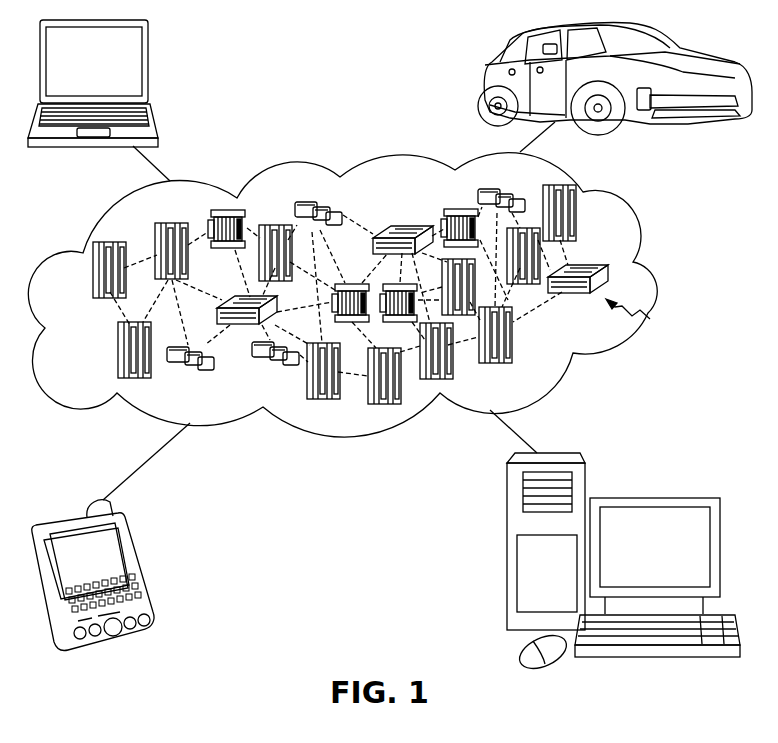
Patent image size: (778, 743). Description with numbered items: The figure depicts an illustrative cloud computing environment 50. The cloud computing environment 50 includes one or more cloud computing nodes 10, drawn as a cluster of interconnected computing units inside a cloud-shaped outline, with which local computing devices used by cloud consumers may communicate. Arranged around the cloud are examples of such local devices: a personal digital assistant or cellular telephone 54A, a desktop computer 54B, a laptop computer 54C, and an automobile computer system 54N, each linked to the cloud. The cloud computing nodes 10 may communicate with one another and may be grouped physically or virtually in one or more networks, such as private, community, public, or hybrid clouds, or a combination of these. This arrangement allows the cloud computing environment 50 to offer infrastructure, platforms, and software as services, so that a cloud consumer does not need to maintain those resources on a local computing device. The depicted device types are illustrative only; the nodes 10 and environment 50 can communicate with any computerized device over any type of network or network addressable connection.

The cloud computing nodes 10 is at (650, 319).
The cloud computing environment 50 is at (657, 279).
The personal digital assistant (PDA) or cellular telephone 54A is at (138, 572).
The desktop computer 54B is at (656, 498).
The laptop computer 54C is at (148, 68).
The automobile computer system 54N is at (484, 83).